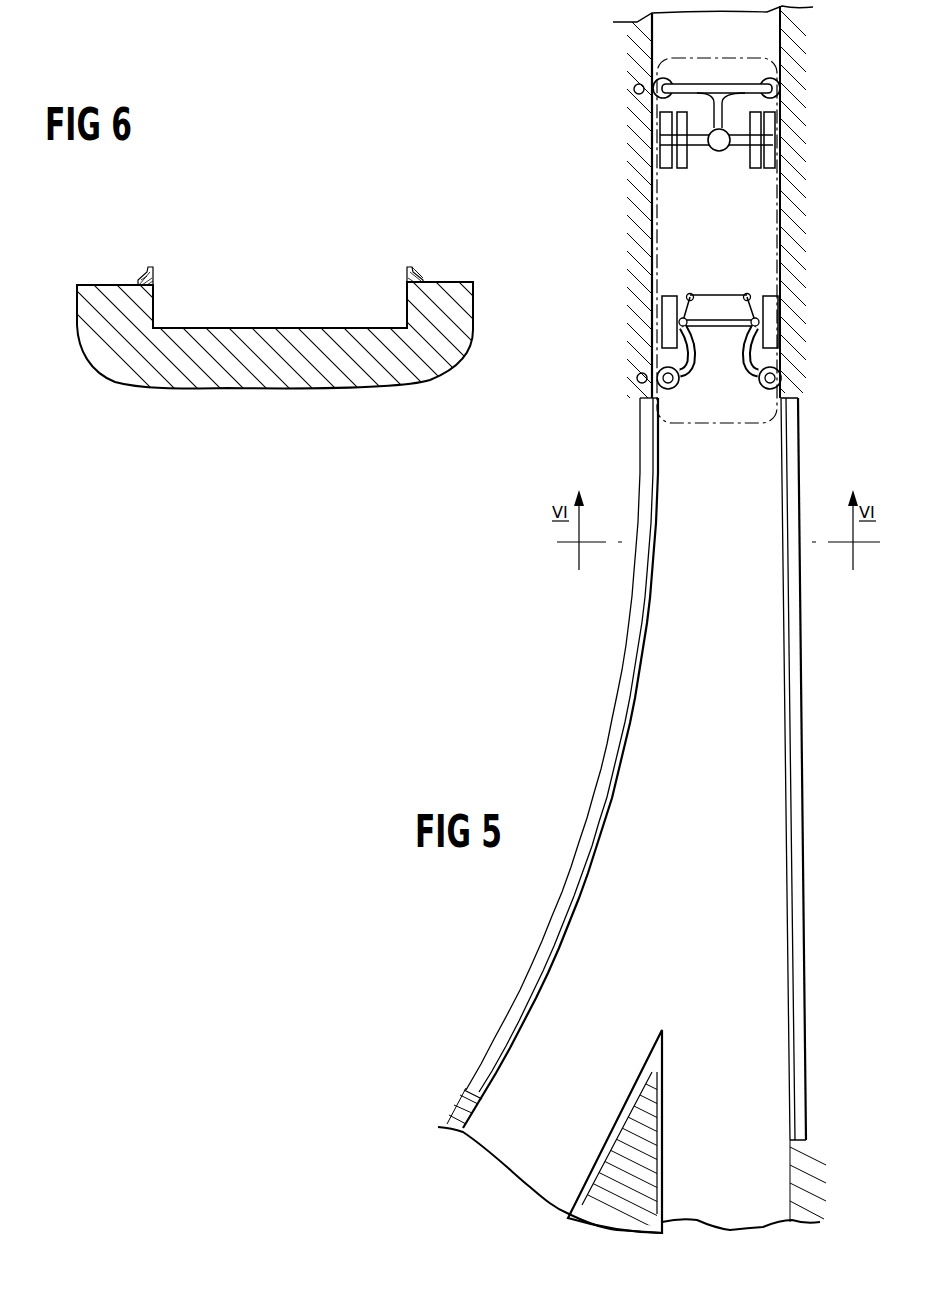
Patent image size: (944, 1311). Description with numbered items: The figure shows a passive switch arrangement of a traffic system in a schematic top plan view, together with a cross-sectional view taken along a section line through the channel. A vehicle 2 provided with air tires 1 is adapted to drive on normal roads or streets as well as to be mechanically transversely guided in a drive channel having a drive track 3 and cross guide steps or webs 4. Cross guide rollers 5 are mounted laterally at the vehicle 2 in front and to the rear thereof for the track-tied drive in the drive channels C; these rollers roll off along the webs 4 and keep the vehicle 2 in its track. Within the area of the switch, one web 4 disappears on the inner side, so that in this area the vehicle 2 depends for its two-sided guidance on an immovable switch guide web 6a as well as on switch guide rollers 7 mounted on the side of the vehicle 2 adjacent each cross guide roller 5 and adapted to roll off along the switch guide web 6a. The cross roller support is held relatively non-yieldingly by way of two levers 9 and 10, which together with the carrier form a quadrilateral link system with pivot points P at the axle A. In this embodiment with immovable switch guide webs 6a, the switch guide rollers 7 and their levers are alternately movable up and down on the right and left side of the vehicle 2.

In FIG. 5, the air tires 1 is at (660, 151).
In FIG. 5, the vehicle 2 is at (650, 254).
In FIG. 6, the drive track 3 is at (290, 328).
In FIG. 6, the cross guide steps or webs 4 is at (153, 306).
In FIG. 5, the cross guide steps or webs 4 is at (690, 213).
In FIG. 5, the cross guide rollers 5 is at (670, 389).
In FIG. 6, the switch guide web 6a is at (368, 265).
In FIG. 5, the switch guide web 6a is at (651, 737).
In FIG. 5, the switch guide rollers 7 is at (634, 87).
In FIG. 5, the lever 9 is at (685, 373).
In FIG. 5, the lever 10 is at (753, 373).
In FIG. 5, the axle A is at (724, 318).
In FIG. 5, the pivot points P is at (688, 329).
In FIG. 6, the drive channels C is at (236, 314).